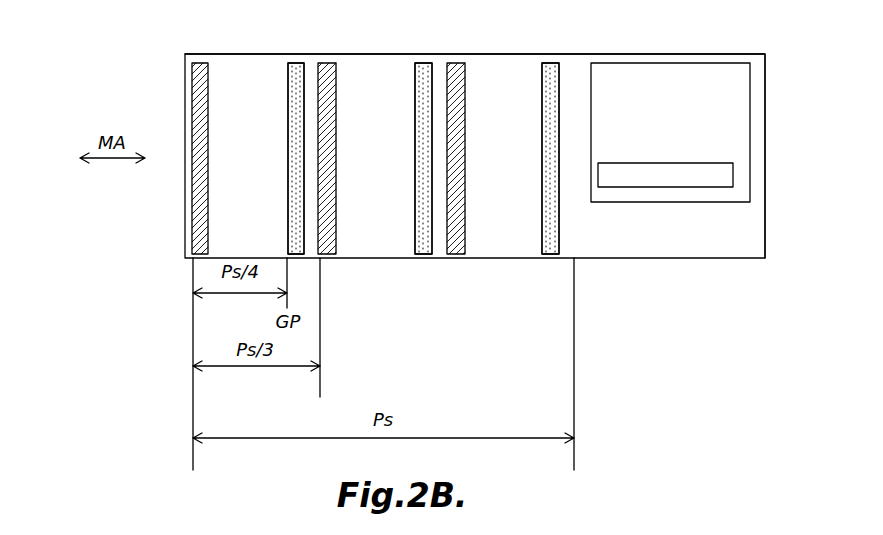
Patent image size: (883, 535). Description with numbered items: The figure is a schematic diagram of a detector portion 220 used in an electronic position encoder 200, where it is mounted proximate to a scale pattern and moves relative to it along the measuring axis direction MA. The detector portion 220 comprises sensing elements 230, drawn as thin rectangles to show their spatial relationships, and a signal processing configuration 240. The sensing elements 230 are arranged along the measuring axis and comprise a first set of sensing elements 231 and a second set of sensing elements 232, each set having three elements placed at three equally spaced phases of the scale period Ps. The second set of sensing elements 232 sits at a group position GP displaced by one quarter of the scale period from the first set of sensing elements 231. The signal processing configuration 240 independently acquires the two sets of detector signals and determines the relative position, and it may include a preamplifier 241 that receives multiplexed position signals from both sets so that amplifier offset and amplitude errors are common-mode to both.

The electronic position encoder 200 is at (784, 94).
The detector portion 220 is at (717, 54).
The sensing elements 230 is at (574, 233).
The first set of sensing elements 231 is at (457, 63).
The second set of sensing elements 232 is at (298, 258).
The signal processing configuration 240 is at (735, 202).
The preamplifier 241 is at (661, 187).